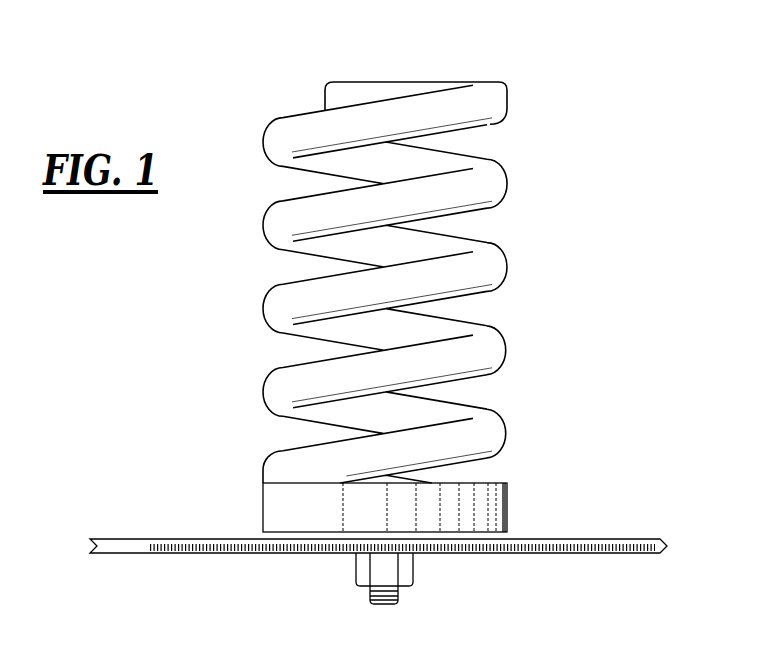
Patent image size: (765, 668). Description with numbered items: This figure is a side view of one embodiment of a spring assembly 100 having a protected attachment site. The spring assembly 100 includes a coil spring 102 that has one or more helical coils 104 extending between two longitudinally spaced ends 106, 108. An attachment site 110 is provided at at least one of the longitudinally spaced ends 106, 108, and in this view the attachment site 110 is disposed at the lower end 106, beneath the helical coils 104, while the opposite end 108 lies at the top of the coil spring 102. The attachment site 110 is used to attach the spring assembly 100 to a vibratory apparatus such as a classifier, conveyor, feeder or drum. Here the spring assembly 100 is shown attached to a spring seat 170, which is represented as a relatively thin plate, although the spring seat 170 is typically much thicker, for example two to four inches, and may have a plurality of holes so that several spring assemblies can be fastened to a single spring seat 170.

The spring assembly 100 is at (404, 280).
The coil spring 102 is at (283, 305).
The helical coils 104 is at (404, 270).
The end 106 is at (396, 507).
The end 108 is at (268, 83).
The attachment site 110 is at (507, 505).
The spring seat 170 is at (215, 553).